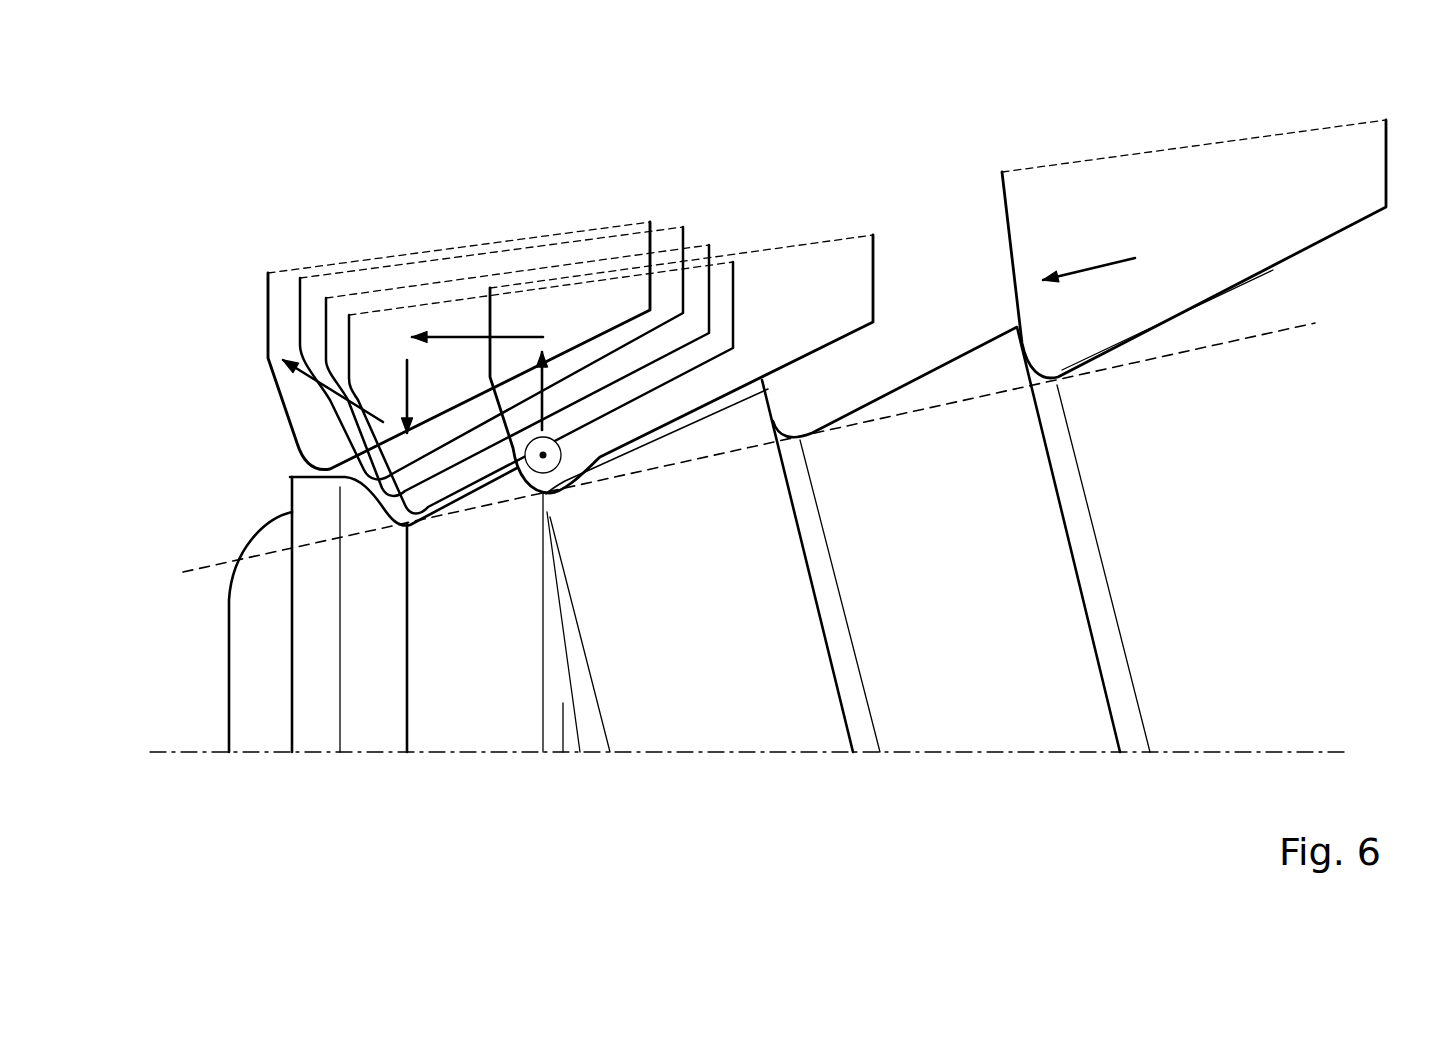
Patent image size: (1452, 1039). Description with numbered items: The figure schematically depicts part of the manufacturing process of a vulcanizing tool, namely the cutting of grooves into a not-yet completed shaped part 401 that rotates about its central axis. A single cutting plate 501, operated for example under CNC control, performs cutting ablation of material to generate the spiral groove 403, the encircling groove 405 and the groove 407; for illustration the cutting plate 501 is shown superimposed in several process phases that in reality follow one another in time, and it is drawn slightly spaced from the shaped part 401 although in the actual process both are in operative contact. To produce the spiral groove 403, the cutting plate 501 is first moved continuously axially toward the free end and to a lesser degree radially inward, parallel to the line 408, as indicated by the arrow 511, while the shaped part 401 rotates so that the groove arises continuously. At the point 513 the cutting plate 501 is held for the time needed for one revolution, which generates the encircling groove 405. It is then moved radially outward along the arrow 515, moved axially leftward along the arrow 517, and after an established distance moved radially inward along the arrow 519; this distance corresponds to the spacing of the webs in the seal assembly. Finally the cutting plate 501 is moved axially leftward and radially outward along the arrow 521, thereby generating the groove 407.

The shaped part 401 is at (238, 498).
The spiral groove 403 is at (1030, 373).
The encircling groove 405 is at (548, 495).
The groove 407 is at (404, 527).
The line 408 is at (1310, 327).
The cutting plate 501 is at (1002, 227).
The arrow 511 is at (1108, 261).
The point 513 is at (540, 494).
The arrow 515 is at (545, 372).
The arrow 517 is at (468, 337).
The arrow 519 is at (406, 360).
The arrow 521 is at (322, 383).